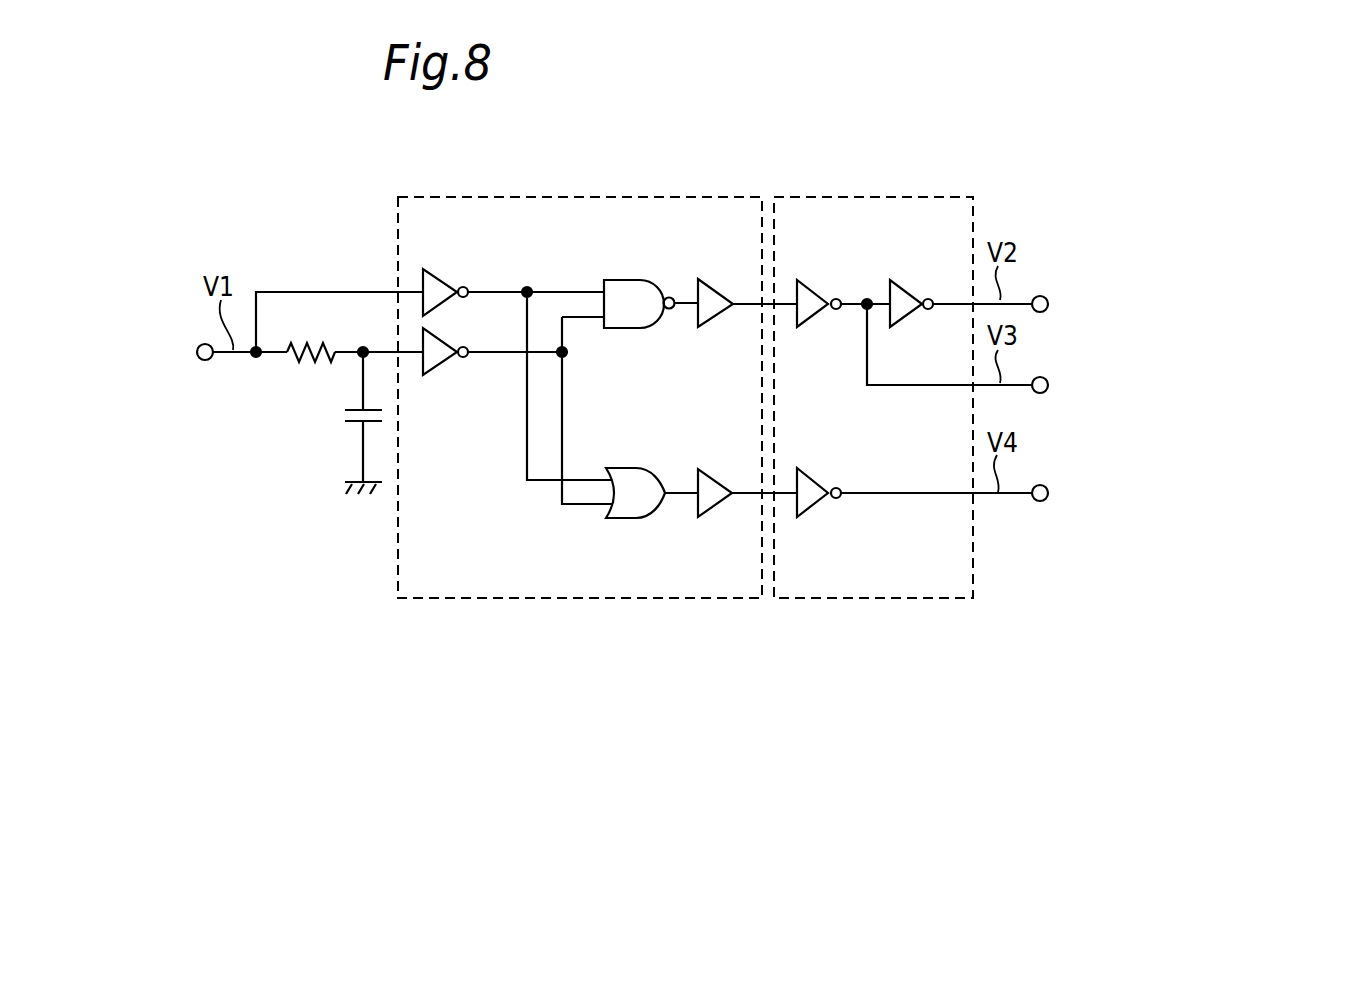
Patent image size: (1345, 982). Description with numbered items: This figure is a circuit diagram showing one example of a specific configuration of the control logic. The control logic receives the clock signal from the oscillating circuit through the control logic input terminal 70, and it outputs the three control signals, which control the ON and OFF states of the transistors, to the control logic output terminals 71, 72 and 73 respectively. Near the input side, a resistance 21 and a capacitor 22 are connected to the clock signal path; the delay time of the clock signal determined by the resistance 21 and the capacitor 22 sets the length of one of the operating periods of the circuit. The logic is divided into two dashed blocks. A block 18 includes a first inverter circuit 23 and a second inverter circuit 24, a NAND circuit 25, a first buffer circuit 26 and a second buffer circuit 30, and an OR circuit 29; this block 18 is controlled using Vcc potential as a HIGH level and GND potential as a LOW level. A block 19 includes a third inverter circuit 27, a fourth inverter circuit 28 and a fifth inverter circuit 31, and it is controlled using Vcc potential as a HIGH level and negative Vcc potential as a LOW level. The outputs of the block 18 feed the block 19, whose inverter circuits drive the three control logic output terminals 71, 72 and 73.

The block 18 is at (582, 598).
The block 19 is at (872, 598).
The resistance 21 is at (313, 358).
The capacitor 22 is at (350, 423).
The inverter circuit 23 is at (440, 272).
The inverter circuit 24 is at (440, 363).
The NAND circuit 25 is at (623, 278).
The buffer circuit 26 is at (710, 323).
The inverter circuit 27 is at (817, 288).
The inverter circuit 28 is at (910, 288).
The OR circuit 29 is at (620, 468).
The buffer circuit 30 is at (710, 513).
The inverter circuit 31 is at (817, 480).
The control logic input terminal 70 is at (197, 350).
The control logic output terminal 71 is at (1050, 303).
The control logic output terminal 72 is at (1050, 384).
The control logic output terminal 73 is at (1050, 492).